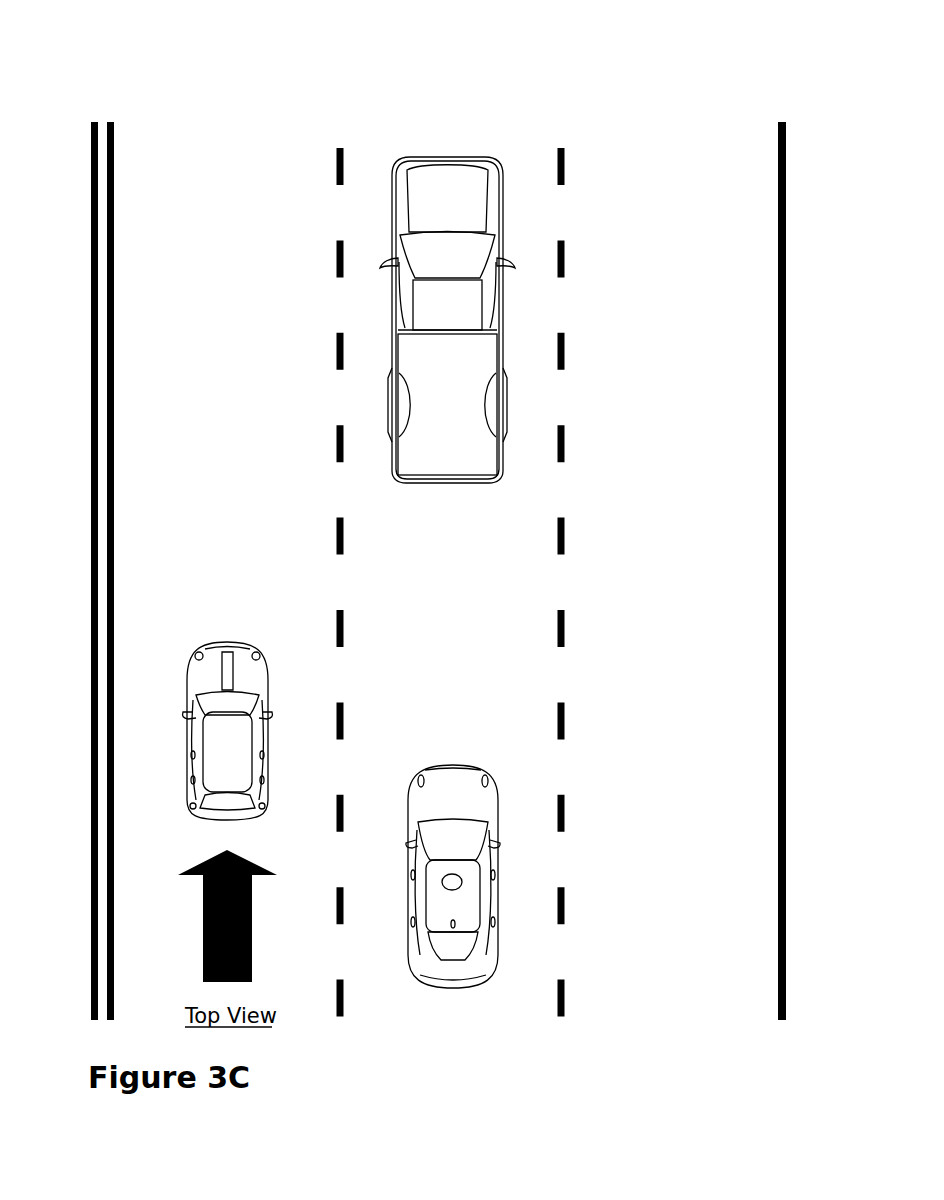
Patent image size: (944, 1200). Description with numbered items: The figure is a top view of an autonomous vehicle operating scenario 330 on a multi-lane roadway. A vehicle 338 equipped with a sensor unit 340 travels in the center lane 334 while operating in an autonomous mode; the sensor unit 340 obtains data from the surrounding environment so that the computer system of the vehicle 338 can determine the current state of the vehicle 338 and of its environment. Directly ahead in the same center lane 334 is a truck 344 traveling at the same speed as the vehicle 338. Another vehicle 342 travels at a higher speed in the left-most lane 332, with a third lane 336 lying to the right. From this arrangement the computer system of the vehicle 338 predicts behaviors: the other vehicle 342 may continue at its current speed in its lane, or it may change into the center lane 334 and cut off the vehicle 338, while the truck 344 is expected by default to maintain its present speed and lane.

The autonomous vehicle operating scenario 330 is at (97, 78).
The left-most lane 332 is at (220, 132).
The center lane 334 is at (445, 132).
The right lane 336 is at (645, 132).
The vehicle 338 is at (412, 805).
The sensor unit 340 is at (441, 888).
The other vehicle 342 is at (212, 645).
The truck 344 is at (420, 158).